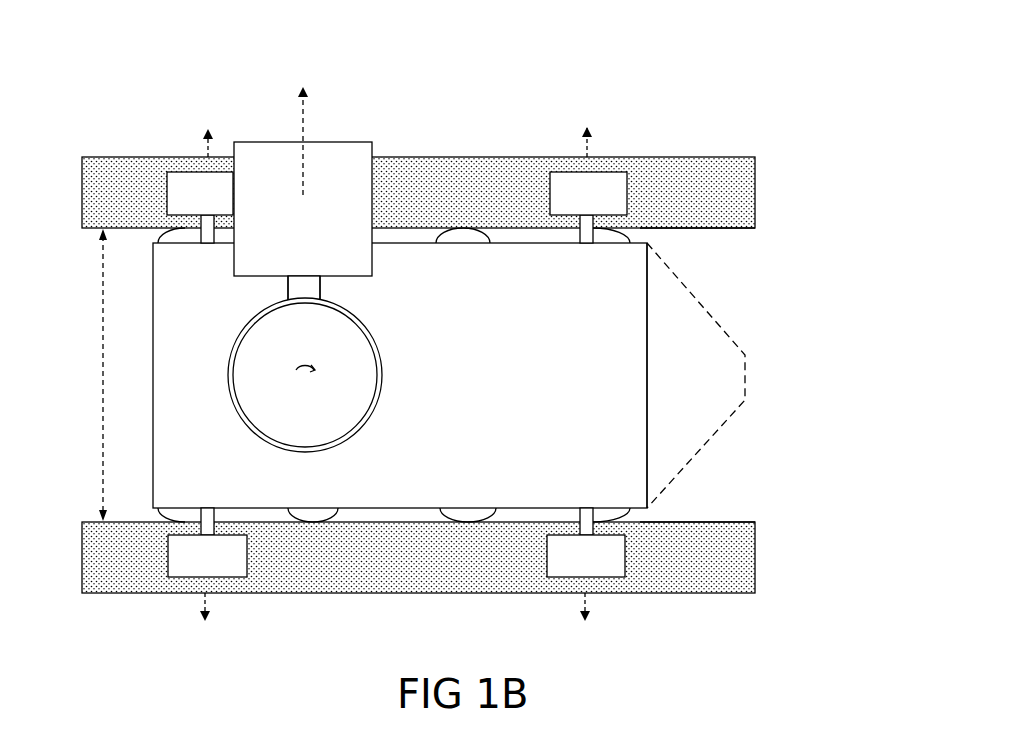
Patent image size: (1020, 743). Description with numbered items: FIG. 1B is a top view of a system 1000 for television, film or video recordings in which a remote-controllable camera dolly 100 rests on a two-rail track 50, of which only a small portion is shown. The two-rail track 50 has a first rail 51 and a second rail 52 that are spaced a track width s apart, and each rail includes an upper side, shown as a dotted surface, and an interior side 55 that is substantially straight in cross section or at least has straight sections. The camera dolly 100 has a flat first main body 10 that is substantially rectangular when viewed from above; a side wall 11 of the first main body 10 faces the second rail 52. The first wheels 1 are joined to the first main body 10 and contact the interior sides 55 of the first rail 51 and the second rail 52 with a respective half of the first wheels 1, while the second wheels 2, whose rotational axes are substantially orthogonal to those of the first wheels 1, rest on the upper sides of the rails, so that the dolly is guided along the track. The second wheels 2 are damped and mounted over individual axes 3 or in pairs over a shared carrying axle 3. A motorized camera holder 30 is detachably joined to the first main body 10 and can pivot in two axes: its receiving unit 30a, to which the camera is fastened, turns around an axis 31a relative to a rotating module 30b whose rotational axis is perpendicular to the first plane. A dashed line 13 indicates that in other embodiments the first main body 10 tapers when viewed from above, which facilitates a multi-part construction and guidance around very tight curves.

The system for television, film or video recordings 1000 is at (589, 42).
The two-rail track 50 is at (425, 382).
The first rail 51 is at (418, 192).
The second rail 52 is at (418, 557).
The interior side 55 is at (680, 232).
The track width s is at (92, 375).
The first main body 10 is at (615, 373).
The side wall of module housing 11 is at (632, 427).
The dashed line 13 is at (738, 340).
The camera dolly 100 is at (722, 357).
The first wheels 1 is at (180, 250).
The axes 3 is at (208, 245).
The second wheels 2 is at (188, 190).
The camera holder 30 is at (307, 247).
The receiving unit 30a is at (300, 245).
The rotating module 30b is at (318, 423).
The axis 31a is at (306, 120).